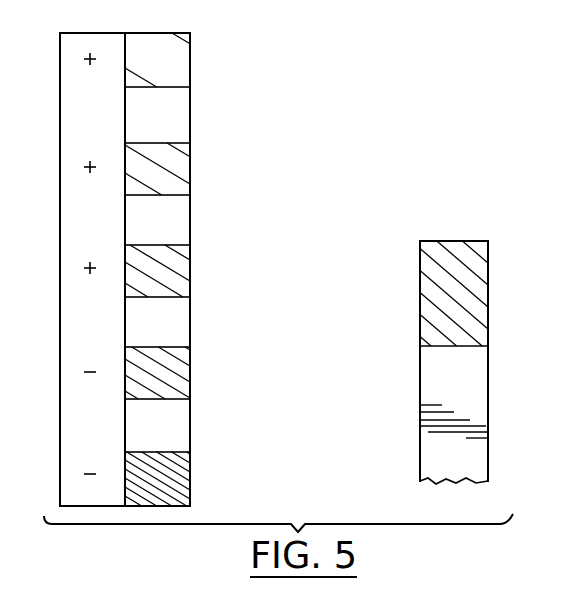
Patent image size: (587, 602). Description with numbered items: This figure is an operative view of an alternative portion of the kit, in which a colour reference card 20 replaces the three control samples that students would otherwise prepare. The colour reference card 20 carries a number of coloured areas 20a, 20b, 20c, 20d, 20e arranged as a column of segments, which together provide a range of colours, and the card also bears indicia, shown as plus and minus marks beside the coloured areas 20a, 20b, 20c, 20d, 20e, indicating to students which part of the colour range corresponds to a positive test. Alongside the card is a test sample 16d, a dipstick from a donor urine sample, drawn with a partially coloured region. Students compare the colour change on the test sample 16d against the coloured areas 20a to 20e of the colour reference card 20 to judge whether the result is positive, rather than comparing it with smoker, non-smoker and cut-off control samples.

The colour reference card 20 is at (226, 111).
The coloured area 20a is at (190, 63).
The coloured area 20b is at (183, 174).
The coloured area 20c is at (183, 272).
The coloured area 20d is at (183, 385).
The coloured area 20e is at (188, 480).
The test sample 16d is at (488, 370).